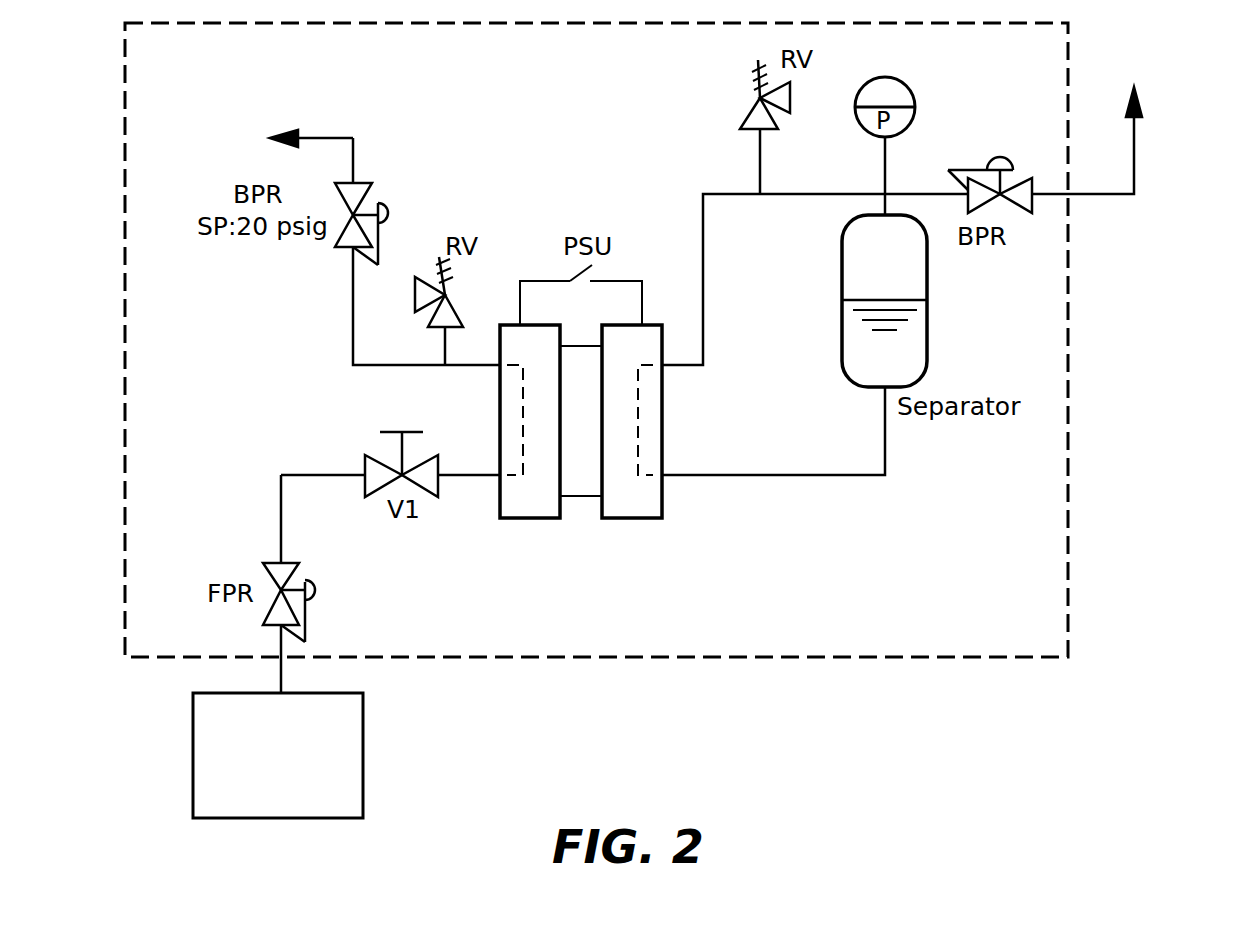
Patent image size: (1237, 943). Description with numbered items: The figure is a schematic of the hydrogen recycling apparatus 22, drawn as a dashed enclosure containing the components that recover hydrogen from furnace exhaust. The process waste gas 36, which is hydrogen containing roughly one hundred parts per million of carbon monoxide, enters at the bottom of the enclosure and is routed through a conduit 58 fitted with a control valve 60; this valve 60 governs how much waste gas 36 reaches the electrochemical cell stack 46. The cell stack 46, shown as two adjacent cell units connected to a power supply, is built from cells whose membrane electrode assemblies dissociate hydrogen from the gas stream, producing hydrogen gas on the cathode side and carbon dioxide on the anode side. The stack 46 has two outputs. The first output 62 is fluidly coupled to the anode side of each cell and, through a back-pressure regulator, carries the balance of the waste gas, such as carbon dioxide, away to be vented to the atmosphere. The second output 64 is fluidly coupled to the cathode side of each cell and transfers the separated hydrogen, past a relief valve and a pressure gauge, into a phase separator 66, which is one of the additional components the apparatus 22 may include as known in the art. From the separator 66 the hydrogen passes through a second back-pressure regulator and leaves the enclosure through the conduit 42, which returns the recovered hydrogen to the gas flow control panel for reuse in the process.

The electrochemical hydrogen recycling device 22 is at (188, 71).
The process waste gas 36 is at (263, 802).
The conduit 42 is at (1134, 160).
The electrochemical cell stack 46 is at (633, 519).
The conduit 58 is at (281, 508).
The control valve 60 is at (367, 460).
The first output 62 is at (353, 312).
The second output 64 is at (703, 248).
The phase separator 66 is at (898, 267).